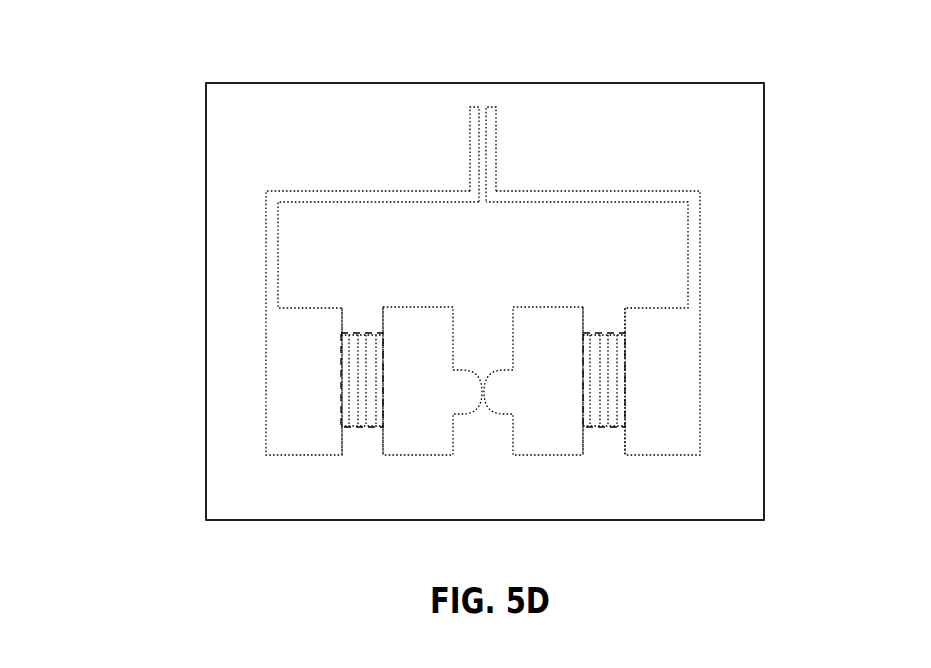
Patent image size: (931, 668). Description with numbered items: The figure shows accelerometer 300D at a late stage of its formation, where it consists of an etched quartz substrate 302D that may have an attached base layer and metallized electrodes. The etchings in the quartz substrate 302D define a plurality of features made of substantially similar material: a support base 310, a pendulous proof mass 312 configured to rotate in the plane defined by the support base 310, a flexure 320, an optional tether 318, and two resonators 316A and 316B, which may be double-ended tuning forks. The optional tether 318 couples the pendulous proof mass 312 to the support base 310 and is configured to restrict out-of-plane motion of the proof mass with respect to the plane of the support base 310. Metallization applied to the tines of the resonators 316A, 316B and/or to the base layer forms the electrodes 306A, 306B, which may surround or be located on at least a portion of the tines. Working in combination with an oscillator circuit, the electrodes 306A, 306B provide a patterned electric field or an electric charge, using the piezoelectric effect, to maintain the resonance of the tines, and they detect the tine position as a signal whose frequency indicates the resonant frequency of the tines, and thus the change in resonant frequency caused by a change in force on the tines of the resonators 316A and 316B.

The accelerometer 300D is at (170, 108).
The etched quartz substrate 302D is at (688, 82).
The support base 310 is at (643, 148).
The pendulous proof mass 312 is at (472, 273).
The tether 318 is at (483, 176).
The flexure 320 is at (485, 398).
The resonator 316A is at (360, 465).
The resonator 316B is at (615, 465).
The electrode 306A is at (342, 396).
The electrode 306B is at (625, 396).